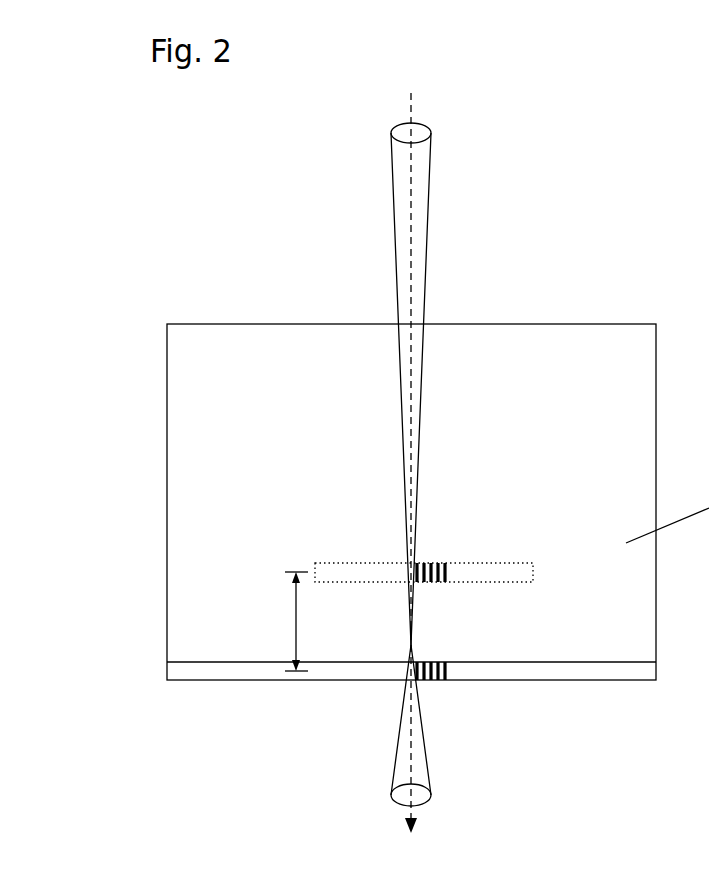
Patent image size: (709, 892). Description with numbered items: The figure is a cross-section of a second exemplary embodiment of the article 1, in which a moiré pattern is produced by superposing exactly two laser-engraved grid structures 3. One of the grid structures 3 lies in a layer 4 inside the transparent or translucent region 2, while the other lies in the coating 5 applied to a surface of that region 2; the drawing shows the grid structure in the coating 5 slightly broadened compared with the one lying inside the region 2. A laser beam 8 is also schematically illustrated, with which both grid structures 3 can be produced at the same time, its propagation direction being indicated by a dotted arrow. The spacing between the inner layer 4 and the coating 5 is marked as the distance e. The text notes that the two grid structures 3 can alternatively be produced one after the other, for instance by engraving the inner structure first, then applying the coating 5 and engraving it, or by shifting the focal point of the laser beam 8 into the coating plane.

The article 1 is at (601, 277).
The transparent or translucent region 2 is at (667, 514).
The grid structures 3 is at (436, 647).
The layer 4 is at (513, 572).
The coating 5 is at (628, 672).
The laser beam 8 is at (420, 170).
The distance e between gratings e is at (288, 621).